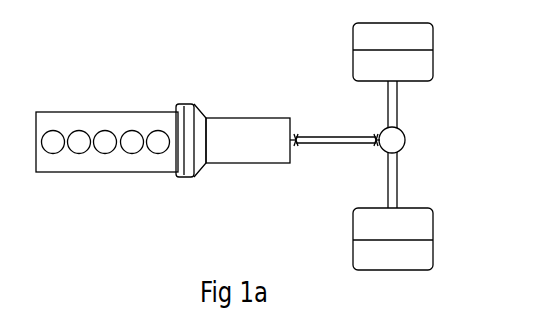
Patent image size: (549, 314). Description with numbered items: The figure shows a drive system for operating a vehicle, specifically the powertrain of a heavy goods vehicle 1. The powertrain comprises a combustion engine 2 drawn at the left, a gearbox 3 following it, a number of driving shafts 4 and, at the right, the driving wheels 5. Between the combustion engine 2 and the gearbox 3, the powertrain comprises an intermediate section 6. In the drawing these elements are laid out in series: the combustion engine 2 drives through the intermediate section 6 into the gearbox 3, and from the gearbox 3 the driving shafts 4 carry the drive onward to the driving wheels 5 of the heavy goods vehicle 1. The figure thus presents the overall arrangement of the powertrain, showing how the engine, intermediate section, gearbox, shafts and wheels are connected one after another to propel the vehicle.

The heavy goods vehicle 1 is at (137, 77).
The combustion engine 2 is at (95, 160).
The gearbox 3 is at (253, 150).
The driving shafts 4 is at (330, 137).
The driving wheels 5 is at (417, 63).
The intermediate section 6 is at (184, 128).